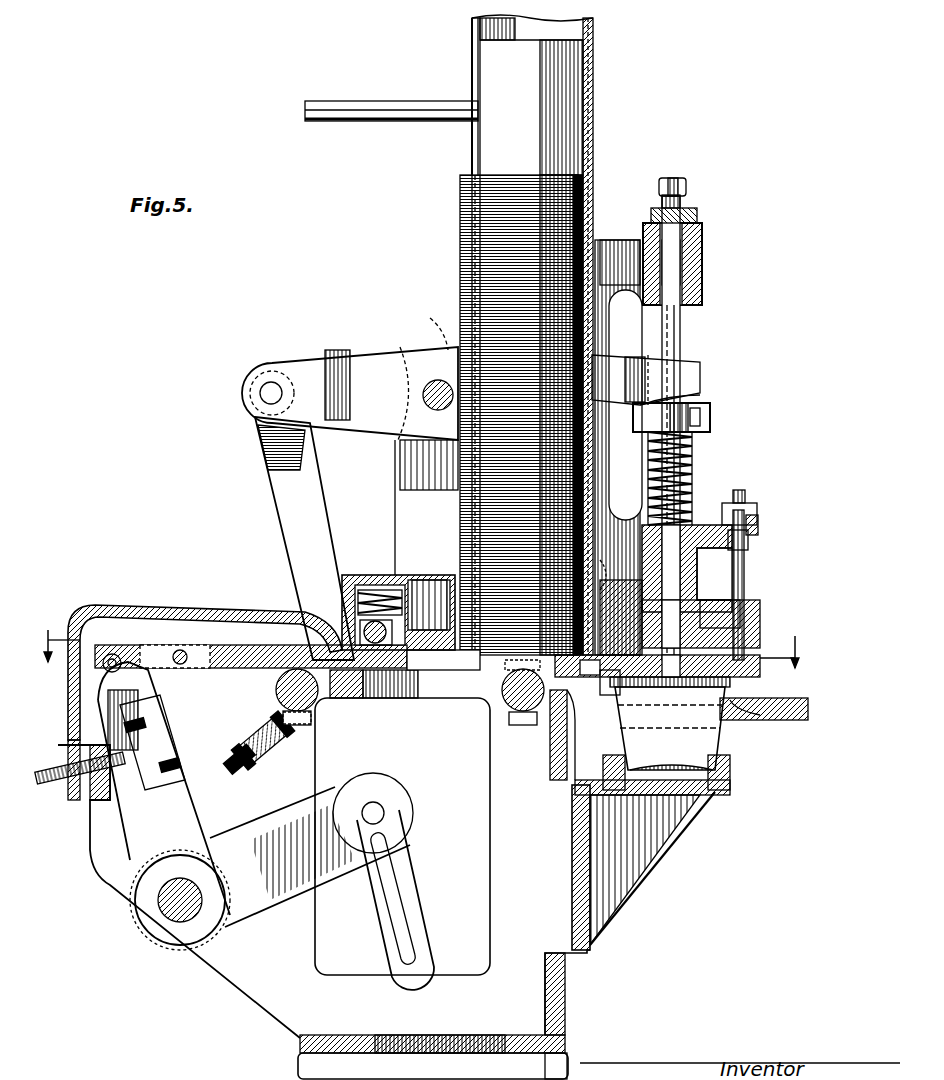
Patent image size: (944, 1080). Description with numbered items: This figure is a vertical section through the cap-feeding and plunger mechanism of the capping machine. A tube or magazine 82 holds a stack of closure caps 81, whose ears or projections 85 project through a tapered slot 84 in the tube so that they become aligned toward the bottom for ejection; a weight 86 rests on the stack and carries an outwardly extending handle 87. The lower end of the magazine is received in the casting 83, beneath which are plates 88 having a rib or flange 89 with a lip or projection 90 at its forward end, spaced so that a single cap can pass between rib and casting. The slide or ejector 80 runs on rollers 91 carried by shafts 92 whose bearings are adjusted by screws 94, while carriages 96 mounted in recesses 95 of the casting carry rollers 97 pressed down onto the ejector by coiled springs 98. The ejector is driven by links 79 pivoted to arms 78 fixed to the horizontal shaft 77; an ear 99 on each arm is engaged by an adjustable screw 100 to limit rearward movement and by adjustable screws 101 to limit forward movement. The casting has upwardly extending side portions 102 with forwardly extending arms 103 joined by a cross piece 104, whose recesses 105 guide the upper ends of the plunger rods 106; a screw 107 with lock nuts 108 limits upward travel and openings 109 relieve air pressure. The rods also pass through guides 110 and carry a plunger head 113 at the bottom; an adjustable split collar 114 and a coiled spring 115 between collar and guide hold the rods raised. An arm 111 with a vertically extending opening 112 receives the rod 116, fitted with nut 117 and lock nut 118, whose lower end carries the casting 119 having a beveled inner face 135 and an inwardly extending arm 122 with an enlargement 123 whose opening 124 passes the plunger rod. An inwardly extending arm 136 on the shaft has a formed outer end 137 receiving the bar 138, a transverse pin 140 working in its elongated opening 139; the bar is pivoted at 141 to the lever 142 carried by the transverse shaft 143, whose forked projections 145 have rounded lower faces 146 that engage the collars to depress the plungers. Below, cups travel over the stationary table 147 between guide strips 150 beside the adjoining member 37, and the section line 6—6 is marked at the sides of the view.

The section line 6- 6 is at (422, 644).
The table 37 is at (780, 704).
The horizontal shaft 77 is at (168, 912).
The arms 78 is at (185, 808).
The links 79 is at (160, 655).
The slide or ejector 80 is at (232, 650).
The closure caps 81 is at (590, 195).
The tubes or magazines 82 is at (592, 125).
The casting 83 is at (642, 600).
The tapered slot 84 is at (470, 140).
The ears or projections 85 is at (460, 205).
The weight 86 is at (588, 88).
The handle 87 is at (393, 102).
The plates 88 is at (550, 730).
The rib or flange 89 is at (610, 660).
The lip or projection 90 is at (612, 695).
The rollers 91 is at (276, 688).
The shafts 92 is at (283, 710).
The screws 94 is at (300, 718).
The recesses 95 is at (412, 600).
The carriages 96 is at (410, 575).
The rollers 97 is at (425, 655).
The coiled springs 98 is at (365, 578).
The ear 99 is at (150, 745).
The adjustable screw 100 is at (62, 782).
The adjustable screws 101 is at (322, 754).
The side portions 102 is at (440, 330).
The forwardly extending arms 103 is at (612, 258).
The cross piece 104 is at (703, 262).
The recesses 105 is at (682, 275).
The plunger rods 106 is at (682, 342).
The screw 107 is at (680, 180).
The lock nuts 108 is at (697, 215).
The openings 109 is at (640, 250).
The guides 110 is at (700, 525).
The arm 111 is at (758, 528).
The vertically extending opening 112 is at (748, 552).
The plunger head 113 is at (678, 700).
The adjustable split collar 114 is at (711, 417).
The coiled spring 115 is at (695, 472).
The rod 116 is at (745, 575).
The nut 117 is at (758, 512).
The lock nut 118 is at (746, 500).
The casting 119 is at (742, 635).
The arm 122 is at (715, 625).
The enlargement 123 is at (622, 568).
The vertically extending opening 124 is at (712, 576).
The beveled inner face 135 is at (748, 720).
The inwardly extending arm 136 is at (310, 857).
The formed outer end 137 is at (400, 795).
The bar 138 is at (280, 478).
The elongated opening 139 is at (408, 905).
The transversely extending pin 140 is at (385, 815).
The pivotal connection 141 is at (273, 385).
The lever 142 is at (362, 370).
The transversely extending shaft 143 is at (423, 395).
The forked projections 145 is at (700, 378).
The rounded lower faces 146 is at (700, 403).
The stationary table 147 is at (690, 796).
The longitudinally extending strips 150 is at (603, 775).